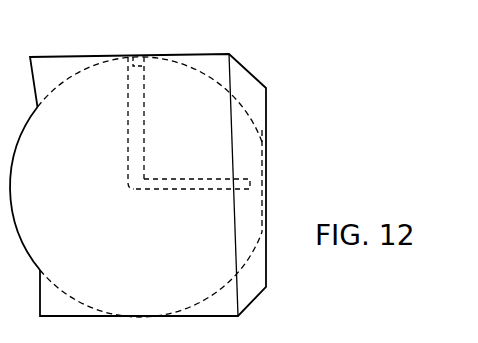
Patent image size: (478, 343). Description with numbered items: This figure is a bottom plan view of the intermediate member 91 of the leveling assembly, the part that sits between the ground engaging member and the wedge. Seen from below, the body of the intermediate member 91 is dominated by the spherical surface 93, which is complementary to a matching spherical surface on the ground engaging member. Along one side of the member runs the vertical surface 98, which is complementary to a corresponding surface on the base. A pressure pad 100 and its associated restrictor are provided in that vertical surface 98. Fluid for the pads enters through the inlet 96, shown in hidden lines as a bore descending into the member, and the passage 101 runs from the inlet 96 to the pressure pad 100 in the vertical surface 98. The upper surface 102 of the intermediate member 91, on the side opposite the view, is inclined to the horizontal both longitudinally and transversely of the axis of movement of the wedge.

The intermediate member 91 is at (77, 62).
The inlet 96 is at (128, 90).
The vertical surface 98 is at (266, 97).
The pressure pad 100 is at (262, 130).
The passage 101 is at (183, 188).
The upper surface 102 is at (158, 230).
The spherical surface 93 is at (430, 6).